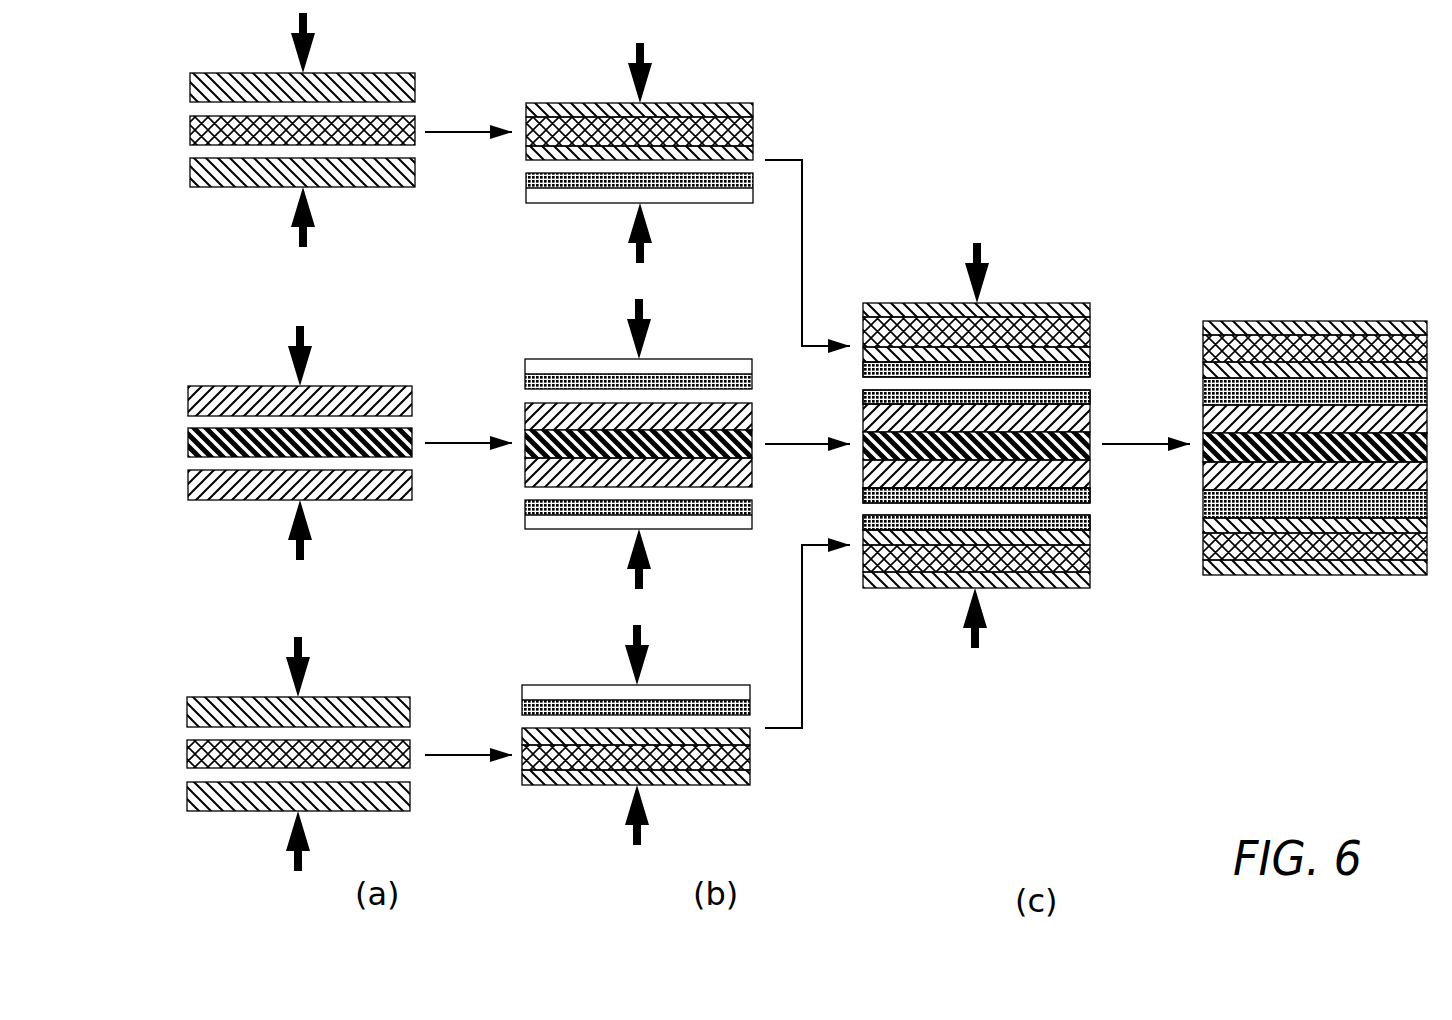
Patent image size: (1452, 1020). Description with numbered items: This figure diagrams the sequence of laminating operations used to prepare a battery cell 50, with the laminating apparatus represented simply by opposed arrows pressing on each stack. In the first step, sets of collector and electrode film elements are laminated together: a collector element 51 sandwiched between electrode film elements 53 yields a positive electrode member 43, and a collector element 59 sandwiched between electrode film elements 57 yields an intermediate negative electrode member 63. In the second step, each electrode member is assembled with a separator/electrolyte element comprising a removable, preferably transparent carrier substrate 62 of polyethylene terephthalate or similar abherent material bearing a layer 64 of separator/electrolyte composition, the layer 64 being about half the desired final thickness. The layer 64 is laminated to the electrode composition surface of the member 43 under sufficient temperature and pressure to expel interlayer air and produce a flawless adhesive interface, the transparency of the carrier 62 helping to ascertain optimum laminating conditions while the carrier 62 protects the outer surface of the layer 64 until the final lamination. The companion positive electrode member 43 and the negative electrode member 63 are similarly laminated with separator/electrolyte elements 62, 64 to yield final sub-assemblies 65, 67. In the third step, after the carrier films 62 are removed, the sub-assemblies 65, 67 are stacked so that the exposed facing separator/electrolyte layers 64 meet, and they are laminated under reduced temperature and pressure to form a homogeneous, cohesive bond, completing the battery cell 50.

The positive electrode member 43 is at (760, 96).
The battery cell 50 is at (1331, 600).
The collector element 51 is at (190, 128).
The electrode film element 53 is at (367, 77).
The electrode film element 57 is at (212, 386).
The collector element 59 is at (188, 445).
The carrier substrate 62 is at (703, 199).
The negative electrode member 63 is at (762, 460).
The separator/electrolyte layer 64 is at (527, 180).
The final sub-assembly 65 is at (1107, 295).
The final sub-assembly 67 is at (1104, 471).